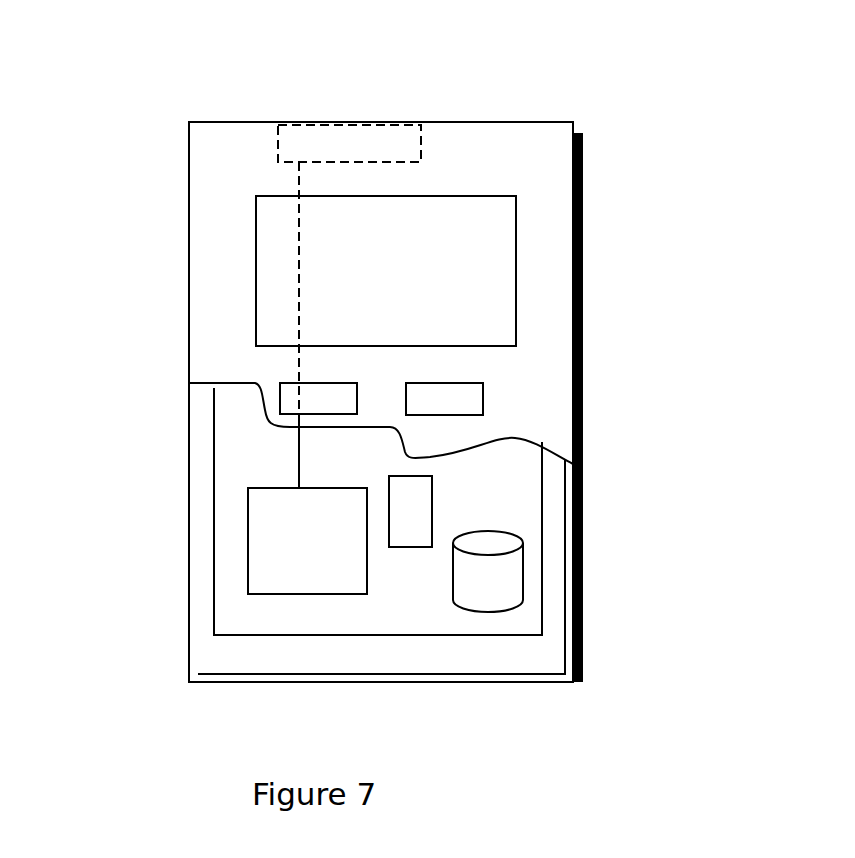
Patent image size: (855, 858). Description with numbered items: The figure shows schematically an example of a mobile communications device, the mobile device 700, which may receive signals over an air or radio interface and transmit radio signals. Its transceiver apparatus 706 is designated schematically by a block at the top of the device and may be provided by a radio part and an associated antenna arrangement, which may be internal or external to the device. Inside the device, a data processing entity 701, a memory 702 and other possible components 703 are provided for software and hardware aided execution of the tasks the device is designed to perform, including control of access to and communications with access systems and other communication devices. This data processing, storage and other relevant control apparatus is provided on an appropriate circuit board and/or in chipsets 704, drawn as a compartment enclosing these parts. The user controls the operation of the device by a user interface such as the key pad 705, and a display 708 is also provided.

The mobile device 700 is at (189, 168).
The data processing entity 701 is at (257, 523).
The memory 702 is at (480, 581).
The other possible components 703 is at (409, 493).
The circuit board and/or chipsets 704 is at (247, 612).
The key pad 705 is at (286, 403).
The transceiver apparatus 706 is at (412, 135).
The display 708 is at (278, 256).